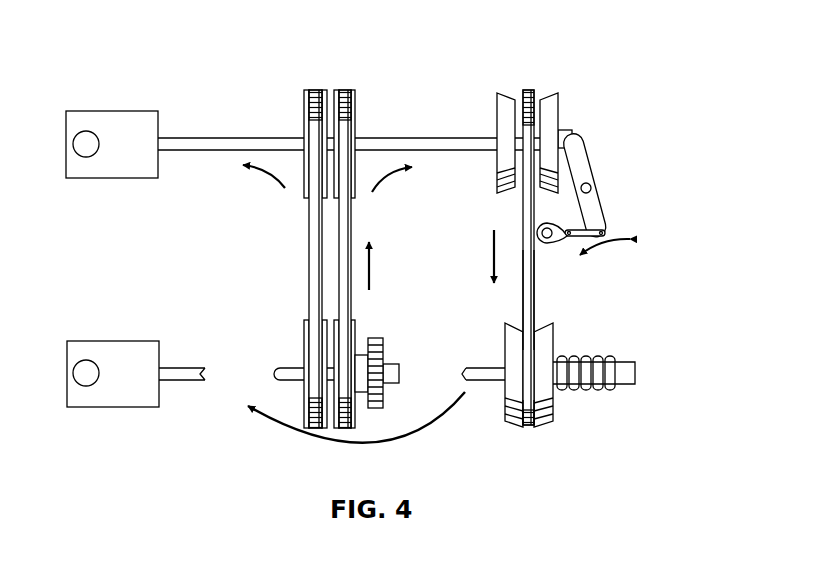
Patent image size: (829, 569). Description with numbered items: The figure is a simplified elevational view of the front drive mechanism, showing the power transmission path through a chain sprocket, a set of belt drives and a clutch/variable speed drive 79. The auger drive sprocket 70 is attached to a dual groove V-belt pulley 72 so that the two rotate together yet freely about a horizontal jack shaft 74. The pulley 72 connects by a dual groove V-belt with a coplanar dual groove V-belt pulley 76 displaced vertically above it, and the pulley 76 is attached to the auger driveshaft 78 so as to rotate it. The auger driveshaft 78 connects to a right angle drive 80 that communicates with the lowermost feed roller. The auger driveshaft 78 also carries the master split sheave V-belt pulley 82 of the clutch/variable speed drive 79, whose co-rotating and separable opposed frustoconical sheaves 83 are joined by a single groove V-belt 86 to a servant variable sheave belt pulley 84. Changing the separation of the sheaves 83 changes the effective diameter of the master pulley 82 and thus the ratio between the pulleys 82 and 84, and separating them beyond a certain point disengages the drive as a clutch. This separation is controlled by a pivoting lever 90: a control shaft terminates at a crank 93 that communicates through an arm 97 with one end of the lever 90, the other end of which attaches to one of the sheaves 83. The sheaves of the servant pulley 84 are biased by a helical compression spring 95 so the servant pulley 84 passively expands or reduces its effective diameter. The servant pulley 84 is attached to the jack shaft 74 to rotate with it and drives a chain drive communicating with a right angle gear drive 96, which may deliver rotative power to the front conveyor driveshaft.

The auger drive sprocket 70 is at (383, 348).
The dual groove V-belt pulley 72 is at (304, 340).
The jack shaft 74 is at (399, 376).
The dual groove V-belt pulley 76 is at (340, 278).
The auger driveshaft 78 is at (250, 138).
The clutch/variable speed drive 79 is at (649, 69).
The right angle drive 80 is at (125, 178).
The master split sheave V-belt pulley 82 is at (531, 84).
The frustoconical sheaves 83 is at (497, 106).
The servant variable sheave belt pulley 84 is at (527, 432).
The single groove V-belt 86 is at (530, 306).
The pivoting lever 90 is at (582, 168).
The crank 93 is at (540, 226).
The helical compression spring 95 is at (583, 390).
The right angle gear drive 96 is at (133, 407).
The arm 97 is at (596, 231).